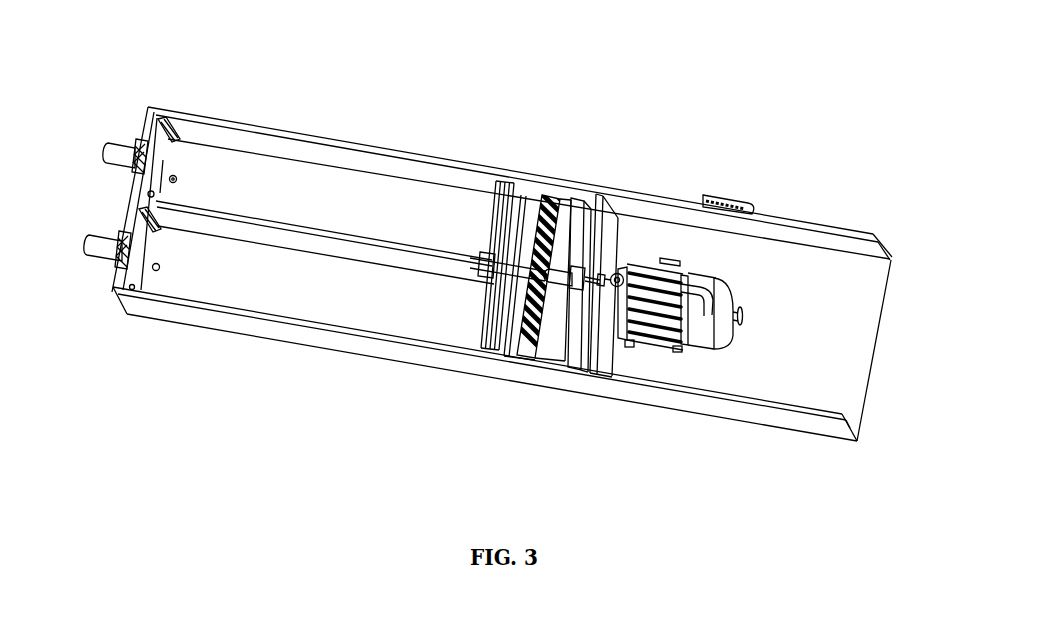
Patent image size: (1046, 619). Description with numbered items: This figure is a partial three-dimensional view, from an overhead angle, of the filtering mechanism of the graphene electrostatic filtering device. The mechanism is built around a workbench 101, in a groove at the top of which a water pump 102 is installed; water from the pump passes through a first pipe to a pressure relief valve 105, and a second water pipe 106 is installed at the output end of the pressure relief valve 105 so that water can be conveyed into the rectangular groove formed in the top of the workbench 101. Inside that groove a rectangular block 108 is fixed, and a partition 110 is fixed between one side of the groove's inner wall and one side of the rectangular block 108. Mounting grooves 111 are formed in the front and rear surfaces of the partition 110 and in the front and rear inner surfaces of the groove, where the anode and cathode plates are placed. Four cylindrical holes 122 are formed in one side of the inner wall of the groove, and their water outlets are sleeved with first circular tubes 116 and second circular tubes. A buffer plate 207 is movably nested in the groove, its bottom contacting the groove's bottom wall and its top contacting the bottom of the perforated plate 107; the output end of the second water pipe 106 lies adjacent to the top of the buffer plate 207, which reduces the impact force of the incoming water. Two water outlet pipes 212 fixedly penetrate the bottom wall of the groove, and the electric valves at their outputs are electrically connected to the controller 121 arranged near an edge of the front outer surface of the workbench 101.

The workbench 101 is at (865, 275).
The water pump 102 is at (743, 313).
The pressure relief valve 105 is at (617, 245).
The second water pipe 106 is at (555, 361).
The perforated plate 107 is at (522, 357).
The rectangular block 108 is at (515, 188).
The partition 110 is at (273, 224).
The mounting grooves 111 is at (315, 142).
The first circular tubes 116 is at (102, 150).
The controller 121 is at (725, 204).
The cylindrical holes 122 is at (148, 107).
The buffer plate 207 is at (574, 220).
The water outlet pipes 212 is at (175, 176).